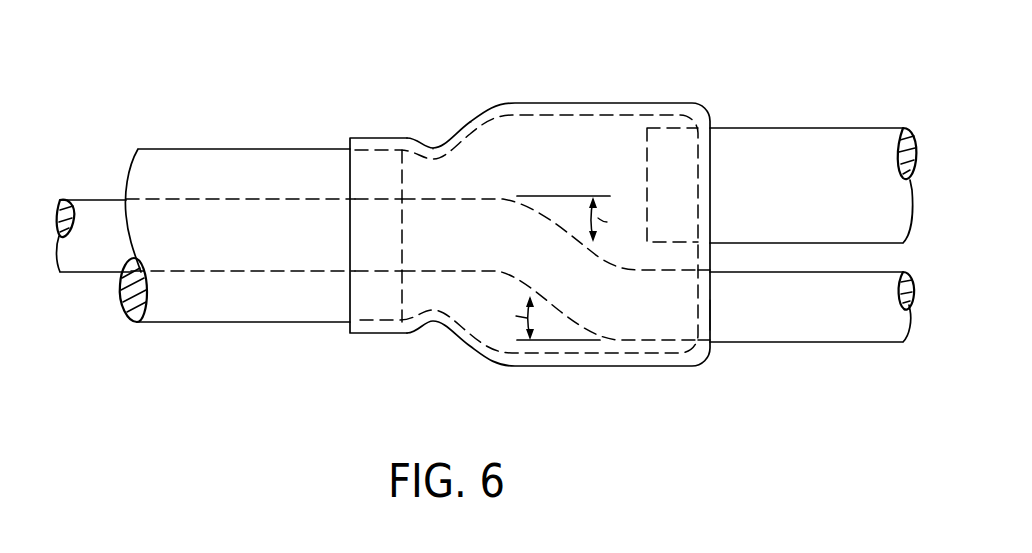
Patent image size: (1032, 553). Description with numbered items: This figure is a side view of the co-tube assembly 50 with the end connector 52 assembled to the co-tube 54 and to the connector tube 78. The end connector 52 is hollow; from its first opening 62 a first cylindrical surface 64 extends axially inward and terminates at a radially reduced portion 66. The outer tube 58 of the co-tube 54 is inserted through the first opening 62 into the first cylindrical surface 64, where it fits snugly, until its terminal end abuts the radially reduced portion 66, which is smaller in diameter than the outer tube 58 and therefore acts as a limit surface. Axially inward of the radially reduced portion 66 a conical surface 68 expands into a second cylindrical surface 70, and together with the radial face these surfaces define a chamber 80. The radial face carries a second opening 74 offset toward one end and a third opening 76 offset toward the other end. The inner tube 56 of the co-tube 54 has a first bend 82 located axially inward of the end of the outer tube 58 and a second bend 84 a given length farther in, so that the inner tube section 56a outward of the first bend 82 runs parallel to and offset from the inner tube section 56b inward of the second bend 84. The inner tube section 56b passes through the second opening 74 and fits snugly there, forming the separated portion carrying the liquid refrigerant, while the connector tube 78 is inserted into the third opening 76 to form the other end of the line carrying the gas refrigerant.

The co-tube assembly 50 is at (542, 186).
The end connector 52 is at (581, 103).
The co-tube 54 is at (230, 147).
The inner tube 56 is at (87, 199).
The inner tube section 56a is at (420, 252).
The inner tube section 56b is at (668, 312).
The outer tube 58 is at (150, 148).
The first opening 62 is at (350, 290).
The first cylindrical surface 64 is at (366, 150).
The radially reduced portion 66 is at (438, 155).
The conical surface 68 is at (485, 133).
The second cylindrical surface 70 is at (579, 118).
The second opening 74 is at (703, 313).
The third opening 76 is at (704, 146).
The connector tube 78 is at (832, 138).
The chamber 80 is at (579, 179).
The first bend 82 is at (503, 198).
The second bend 84 is at (618, 340).